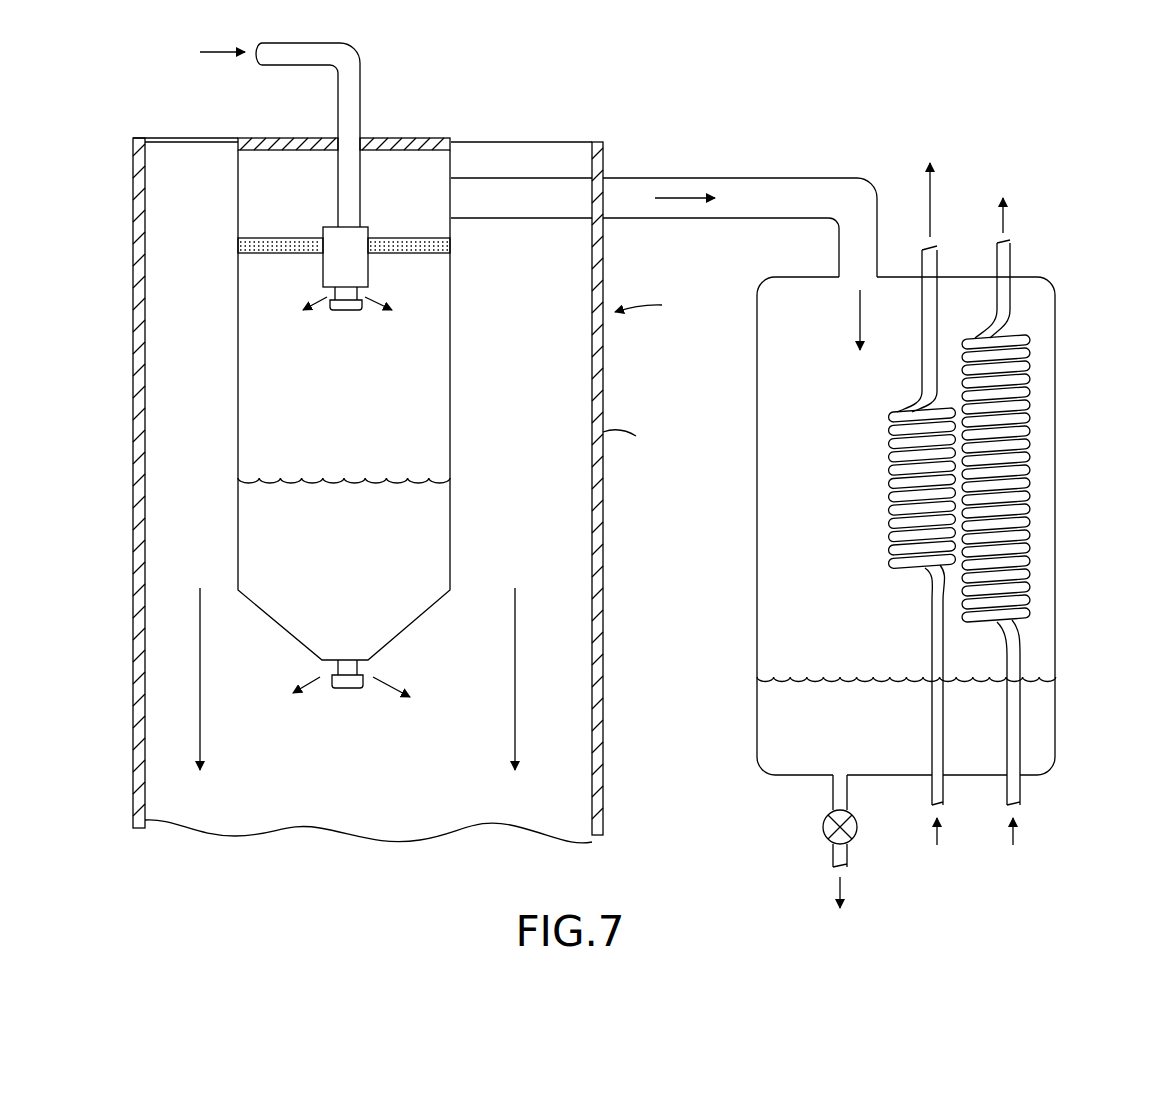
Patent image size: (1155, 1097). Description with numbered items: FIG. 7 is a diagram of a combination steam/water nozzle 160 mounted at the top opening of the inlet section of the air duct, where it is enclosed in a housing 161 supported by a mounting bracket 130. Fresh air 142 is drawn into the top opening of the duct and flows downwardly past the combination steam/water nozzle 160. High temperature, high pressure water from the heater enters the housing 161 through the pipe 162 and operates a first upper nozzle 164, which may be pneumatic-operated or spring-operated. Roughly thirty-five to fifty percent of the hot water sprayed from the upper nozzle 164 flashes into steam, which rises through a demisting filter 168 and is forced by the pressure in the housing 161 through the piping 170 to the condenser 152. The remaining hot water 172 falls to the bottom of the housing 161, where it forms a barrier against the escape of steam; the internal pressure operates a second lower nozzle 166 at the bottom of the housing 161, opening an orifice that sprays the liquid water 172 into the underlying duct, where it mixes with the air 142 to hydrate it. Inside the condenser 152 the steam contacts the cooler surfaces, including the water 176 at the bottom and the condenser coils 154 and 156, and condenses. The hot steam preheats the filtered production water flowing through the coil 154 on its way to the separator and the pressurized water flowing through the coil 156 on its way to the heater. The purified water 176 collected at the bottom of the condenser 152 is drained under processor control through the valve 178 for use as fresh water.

The mounting bracket 130 is at (220, 138).
The fresh air 142 is at (178, 150).
The condenser 152 is at (1058, 372).
The condenser coil 154 is at (893, 520).
The condenser coil 156 is at (1032, 518).
The combination steam/water nozzle 160 is at (470, 327).
The housing 161 is at (452, 378).
The pipe 162 is at (363, 62).
The first upper nozzle 164 is at (372, 263).
The second lower nozzle 166 is at (360, 665).
The demisting filter 168 is at (268, 238).
The piping 170 is at (762, 178).
The hot water 172 is at (326, 571).
The water 176 is at (855, 672).
The valve 178 is at (822, 822).